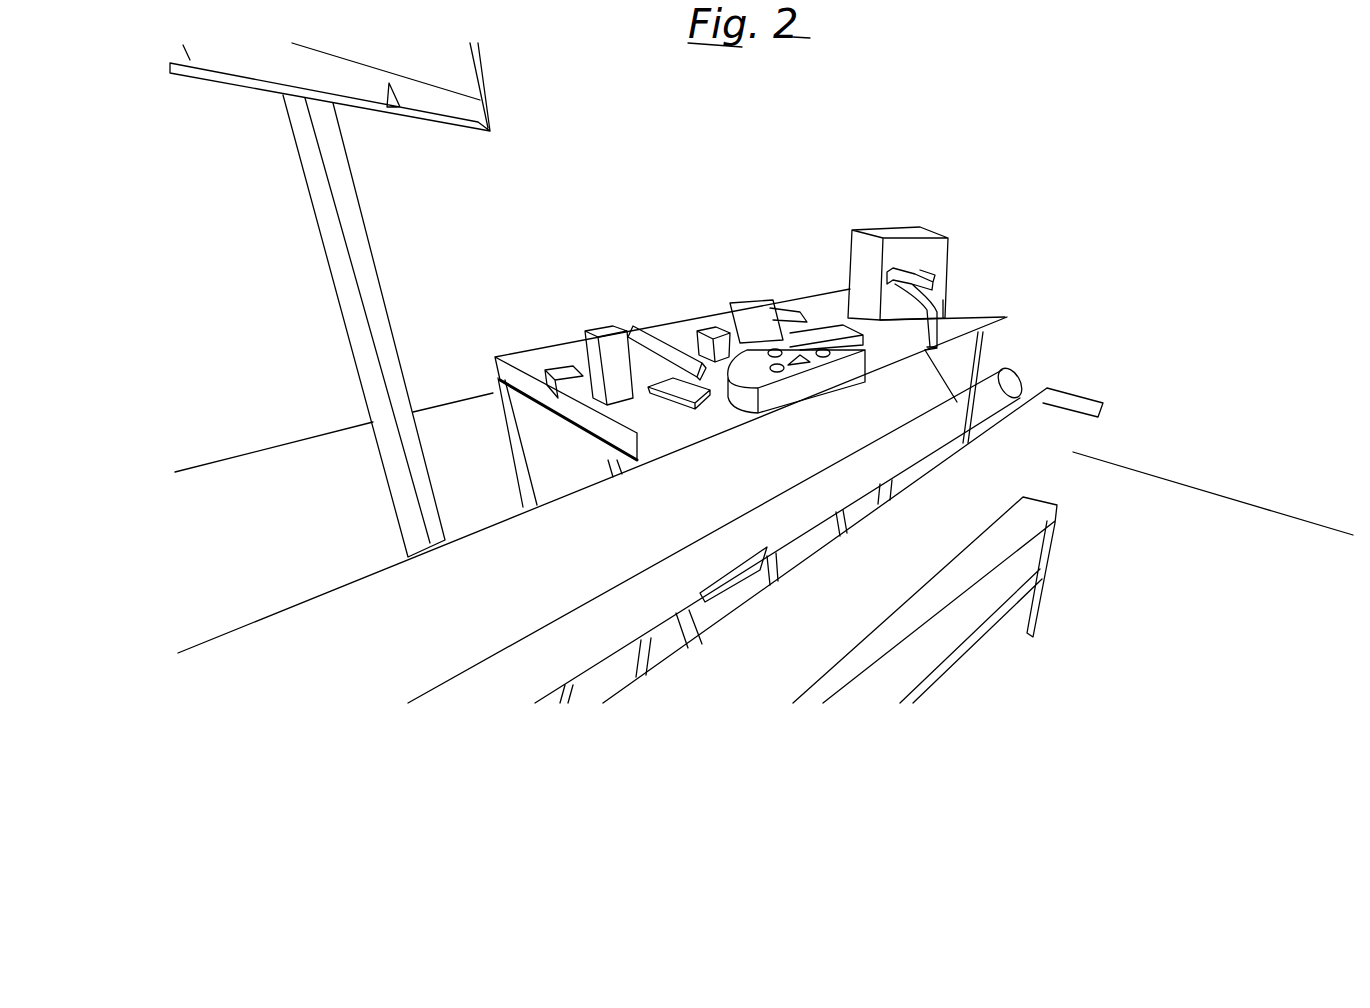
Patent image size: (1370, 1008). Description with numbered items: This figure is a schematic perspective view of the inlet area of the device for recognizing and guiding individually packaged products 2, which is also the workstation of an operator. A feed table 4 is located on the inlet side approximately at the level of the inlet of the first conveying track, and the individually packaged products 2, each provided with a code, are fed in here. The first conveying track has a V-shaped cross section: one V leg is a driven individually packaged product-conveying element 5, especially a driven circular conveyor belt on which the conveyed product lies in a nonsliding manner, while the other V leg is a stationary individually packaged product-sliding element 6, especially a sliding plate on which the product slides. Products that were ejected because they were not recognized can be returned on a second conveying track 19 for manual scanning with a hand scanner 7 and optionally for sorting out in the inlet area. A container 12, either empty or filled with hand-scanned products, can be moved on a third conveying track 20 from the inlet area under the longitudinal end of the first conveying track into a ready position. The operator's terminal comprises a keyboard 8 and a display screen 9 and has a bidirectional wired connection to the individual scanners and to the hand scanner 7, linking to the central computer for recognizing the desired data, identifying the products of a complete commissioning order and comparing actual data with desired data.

The individually packaged product 2 is at (607, 345).
The feed table 4 is at (688, 323).
The individually packaged product-conveying element 5 is at (568, 672).
The individually packaged product-sliding element 6 is at (473, 620).
The hand scanner 7 is at (937, 277).
The keyboard 8 is at (743, 367).
The display screen 9 is at (462, 77).
The container 12 is at (927, 250).
The second conveying track 19 is at (1005, 482).
The third conveying track 20 is at (1013, 564).